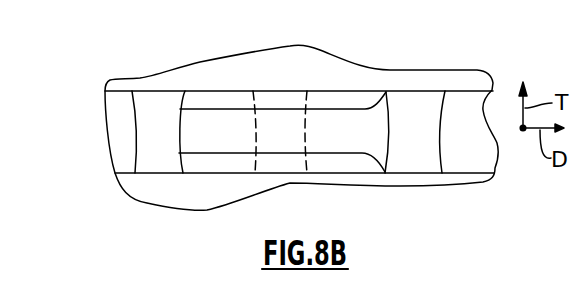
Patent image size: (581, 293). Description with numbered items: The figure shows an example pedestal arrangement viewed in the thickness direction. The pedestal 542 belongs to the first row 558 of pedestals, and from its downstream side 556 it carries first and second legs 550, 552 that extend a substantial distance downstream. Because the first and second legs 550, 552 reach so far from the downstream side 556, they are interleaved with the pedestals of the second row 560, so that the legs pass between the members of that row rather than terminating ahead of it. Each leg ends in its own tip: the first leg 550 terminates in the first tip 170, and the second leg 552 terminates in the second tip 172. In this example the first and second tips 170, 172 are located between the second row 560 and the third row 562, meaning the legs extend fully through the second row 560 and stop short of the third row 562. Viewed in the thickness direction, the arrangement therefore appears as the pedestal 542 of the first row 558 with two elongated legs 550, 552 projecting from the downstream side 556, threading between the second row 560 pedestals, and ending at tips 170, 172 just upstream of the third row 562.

The pedestal 542 is at (145, 136).
The downstream side 556 is at (180, 135).
The first leg 550 is at (332, 100).
The second leg 552 is at (338, 163).
The first tip 170 is at (386, 92).
The second tip 172 is at (385, 173).
The first row 558 is at (156, 62).
The second row 560 is at (282, 58).
The third row 562 is at (424, 62).